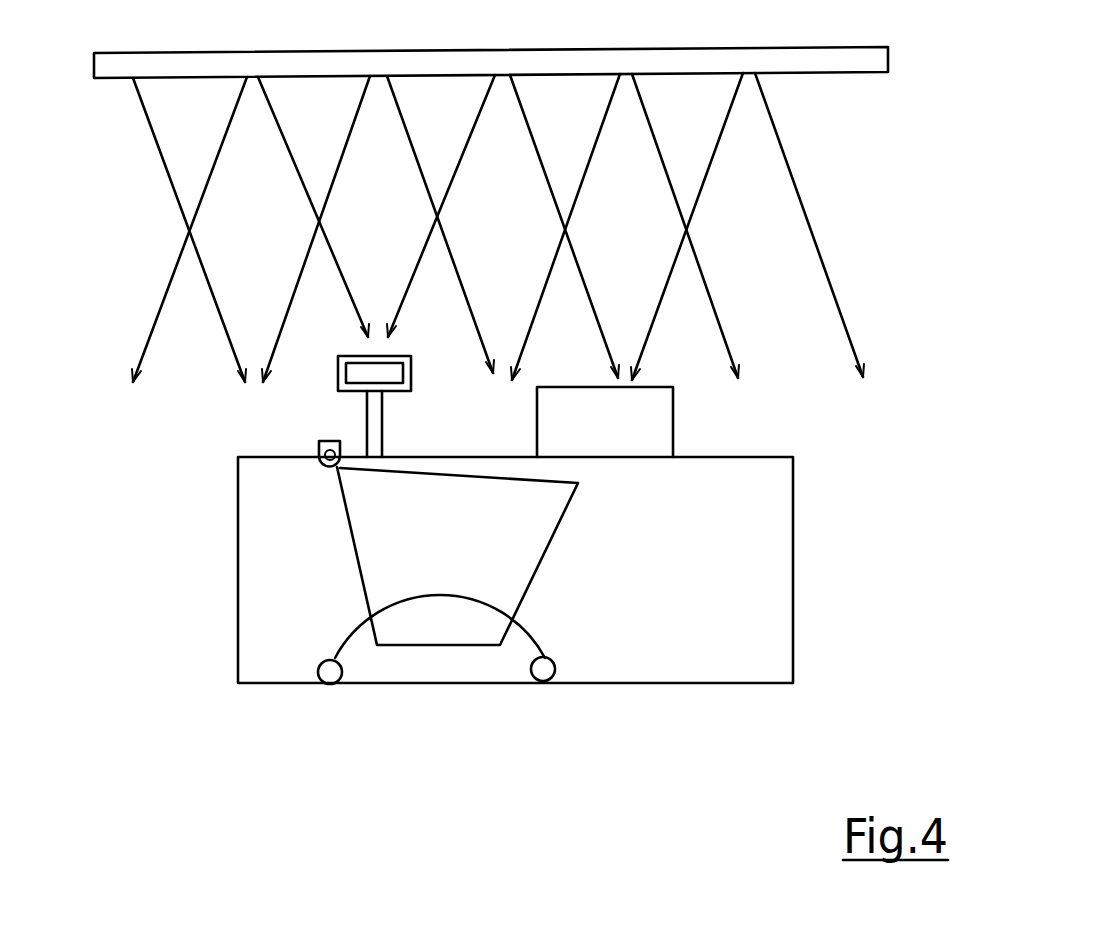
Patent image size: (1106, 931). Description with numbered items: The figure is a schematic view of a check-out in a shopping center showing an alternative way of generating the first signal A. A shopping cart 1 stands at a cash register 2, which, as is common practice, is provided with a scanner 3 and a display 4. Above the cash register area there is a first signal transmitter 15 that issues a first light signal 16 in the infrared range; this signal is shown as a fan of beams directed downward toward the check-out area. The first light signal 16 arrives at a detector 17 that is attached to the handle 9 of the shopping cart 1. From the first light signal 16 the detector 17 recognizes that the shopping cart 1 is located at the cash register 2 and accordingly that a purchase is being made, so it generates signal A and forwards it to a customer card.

The shopping cart 1 is at (382, 557).
The cash register 2 is at (750, 578).
The scanner 3 is at (673, 412).
The display 4 is at (338, 374).
The handle 9 is at (328, 463).
The first signal transmitter 15 is at (870, 58).
The first light signal 16 is at (812, 223).
The detector 17 is at (319, 446).